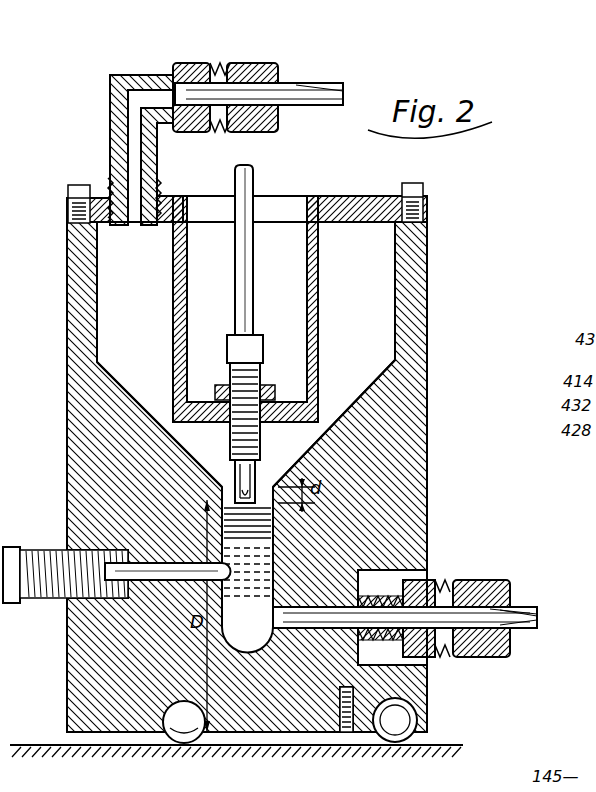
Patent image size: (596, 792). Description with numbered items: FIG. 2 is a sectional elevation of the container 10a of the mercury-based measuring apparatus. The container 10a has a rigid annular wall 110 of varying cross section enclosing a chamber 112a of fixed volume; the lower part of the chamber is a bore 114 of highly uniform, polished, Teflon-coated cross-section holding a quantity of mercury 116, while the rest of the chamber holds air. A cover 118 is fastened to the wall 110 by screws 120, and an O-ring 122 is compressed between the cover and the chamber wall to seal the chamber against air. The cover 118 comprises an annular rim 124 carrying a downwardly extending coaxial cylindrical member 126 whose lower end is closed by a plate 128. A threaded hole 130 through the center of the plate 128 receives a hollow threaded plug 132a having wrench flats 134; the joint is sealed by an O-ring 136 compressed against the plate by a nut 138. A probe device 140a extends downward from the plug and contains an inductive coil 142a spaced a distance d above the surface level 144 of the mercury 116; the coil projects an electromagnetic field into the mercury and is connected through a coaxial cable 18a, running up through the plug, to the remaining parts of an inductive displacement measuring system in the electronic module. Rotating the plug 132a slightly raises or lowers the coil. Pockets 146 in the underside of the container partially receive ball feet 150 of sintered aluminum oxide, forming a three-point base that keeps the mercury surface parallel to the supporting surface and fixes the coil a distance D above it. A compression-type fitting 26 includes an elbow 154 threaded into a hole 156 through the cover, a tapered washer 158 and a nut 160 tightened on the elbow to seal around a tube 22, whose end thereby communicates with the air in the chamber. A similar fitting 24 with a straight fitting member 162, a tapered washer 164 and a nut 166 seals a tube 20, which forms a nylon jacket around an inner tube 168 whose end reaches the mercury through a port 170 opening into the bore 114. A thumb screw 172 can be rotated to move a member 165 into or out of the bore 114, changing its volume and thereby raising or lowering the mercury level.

The container 10a is at (428, 312).
The coaxial cable 18a is at (253, 176).
The tube 20 is at (538, 616).
The tube 22 is at (344, 97).
The fitting 24 is at (439, 593).
The fitting 26 is at (250, 79).
The annular wall 110 is at (406, 255).
The chamber 112a is at (367, 348).
The bore 114 is at (276, 541).
The mercury 116 is at (274, 551).
The cover 118 is at (386, 224).
The screws 120 is at (416, 207).
The O-ring 122 is at (402, 210).
The annular rim 124 is at (347, 194).
The cylindrical member 126 is at (298, 212).
The plate 128 is at (180, 378).
The hole 130 is at (231, 430).
The hollow threaded plug 132a is at (232, 455).
The wrench flats 134 is at (258, 334).
The O-ring 136 is at (222, 400).
The nut 138 is at (273, 384).
The probe device 140a is at (236, 480).
The inductive coil 142a is at (222, 499).
The surface level 144 is at (258, 495).
The pockets 146 is at (372, 722).
The ball feet 150 is at (395, 710).
The elbow 154 is at (109, 86).
The hole 156 is at (100, 202).
The tapered washer 158 is at (279, 80).
The nut 160 is at (238, 64).
The straight fitting member 162 is at (415, 578).
The tapered washer 164 is at (480, 546).
The member 165 is at (160, 585).
The nut 166 is at (510, 593).
The inner tube 168 is at (248, 646).
The port 170 is at (270, 630).
The thumb screw 172 is at (33, 557).